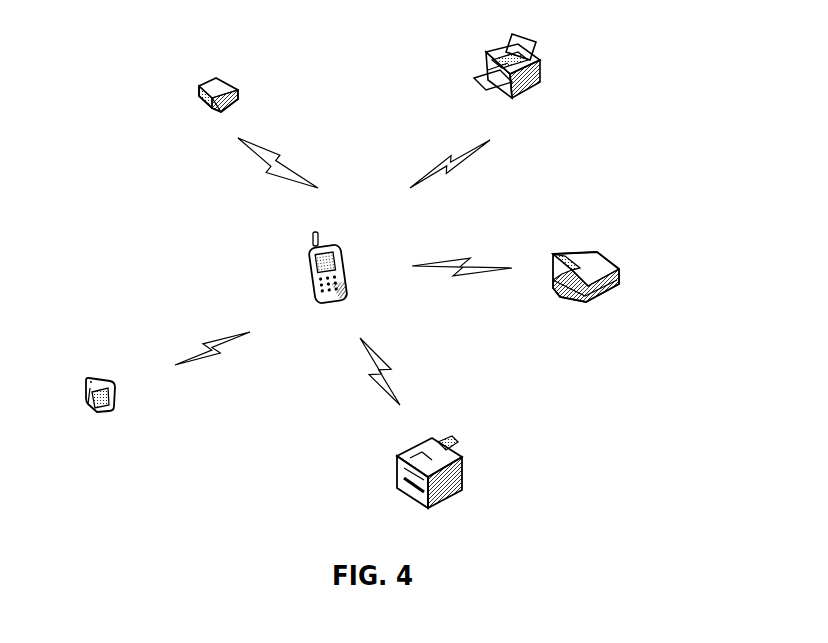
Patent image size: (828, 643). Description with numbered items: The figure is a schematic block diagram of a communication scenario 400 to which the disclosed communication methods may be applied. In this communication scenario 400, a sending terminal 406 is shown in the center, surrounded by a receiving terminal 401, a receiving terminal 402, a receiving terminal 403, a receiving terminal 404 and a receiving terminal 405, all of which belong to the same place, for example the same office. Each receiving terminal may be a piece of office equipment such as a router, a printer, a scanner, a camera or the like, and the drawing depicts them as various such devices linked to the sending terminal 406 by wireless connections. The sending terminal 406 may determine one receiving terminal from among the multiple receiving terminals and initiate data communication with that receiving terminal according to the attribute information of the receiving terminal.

The communication scenario 400 is at (361, 86).
The receiving terminal 401 is at (243, 108).
The receiving terminal 402 is at (534, 77).
The receiving terminal 403 is at (592, 290).
The receiving terminal 404 is at (455, 484).
The receiving terminal 405 is at (167, 406).
The sending terminal 406 is at (343, 279).